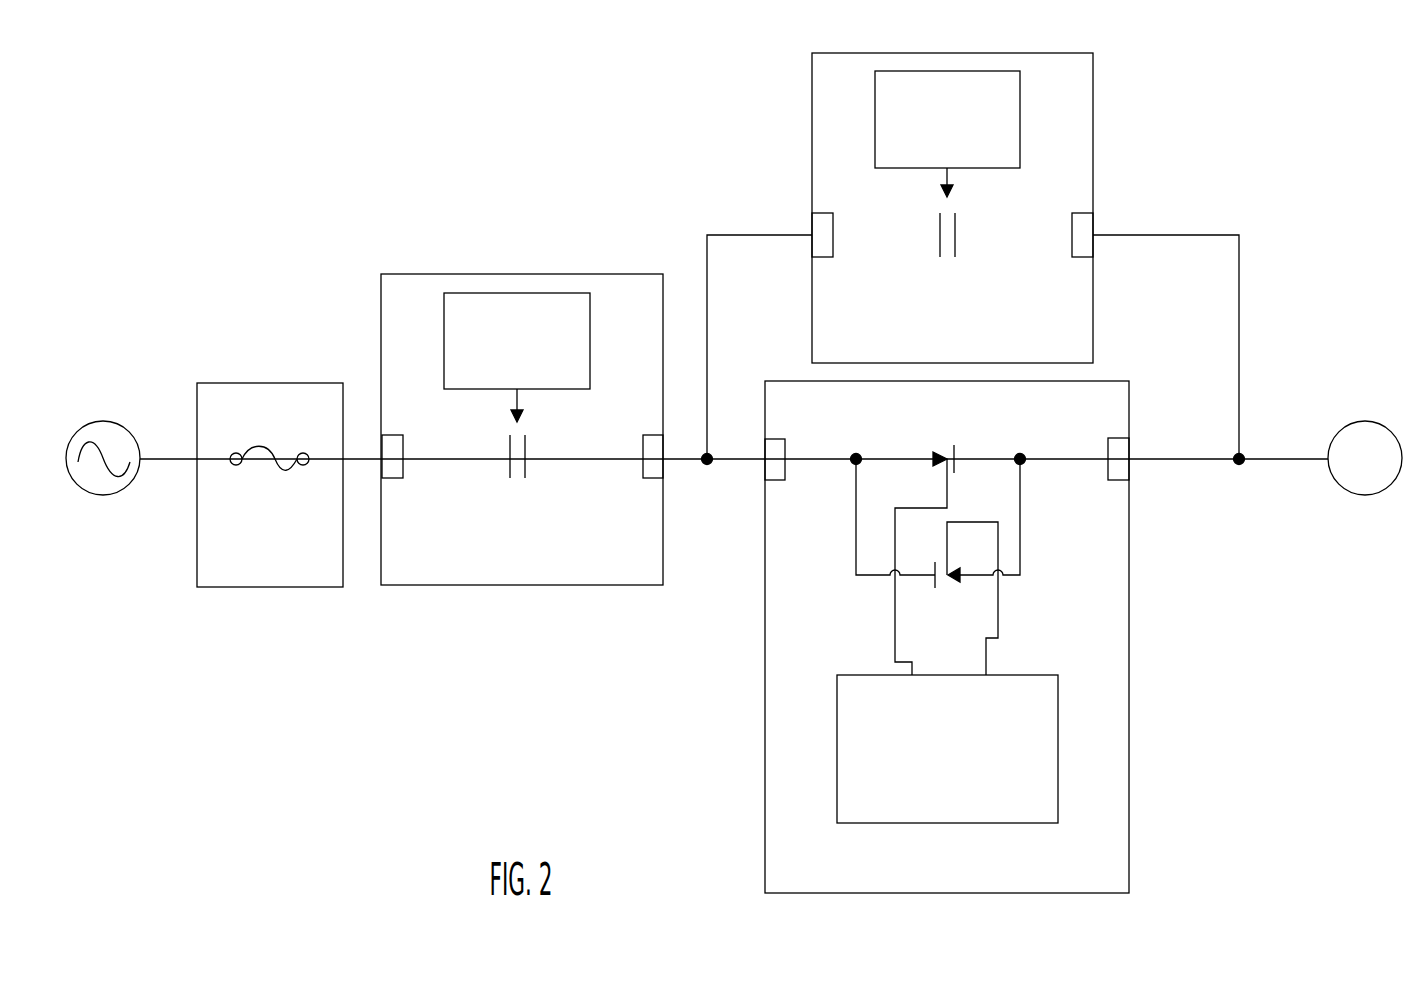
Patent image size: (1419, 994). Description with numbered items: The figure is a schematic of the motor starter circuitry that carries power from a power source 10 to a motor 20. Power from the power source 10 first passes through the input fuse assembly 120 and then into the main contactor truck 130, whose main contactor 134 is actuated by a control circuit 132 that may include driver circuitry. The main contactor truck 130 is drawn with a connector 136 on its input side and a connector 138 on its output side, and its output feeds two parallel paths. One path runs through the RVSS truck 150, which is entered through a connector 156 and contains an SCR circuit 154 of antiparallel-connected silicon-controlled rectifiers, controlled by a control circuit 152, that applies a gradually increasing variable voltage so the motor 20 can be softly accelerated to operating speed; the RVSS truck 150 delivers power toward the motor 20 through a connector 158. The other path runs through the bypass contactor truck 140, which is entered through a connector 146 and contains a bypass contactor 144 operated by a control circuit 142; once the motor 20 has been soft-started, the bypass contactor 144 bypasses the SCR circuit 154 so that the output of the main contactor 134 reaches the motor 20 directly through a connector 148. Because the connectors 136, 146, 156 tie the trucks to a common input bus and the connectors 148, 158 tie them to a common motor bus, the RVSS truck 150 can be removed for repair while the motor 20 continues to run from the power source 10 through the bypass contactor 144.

The power source 10 is at (115, 420).
The motor 20 is at (1343, 425).
The input fuse assembly 120 is at (254, 576).
The main contactor truck 130 is at (506, 577).
The control circuit 132 is at (533, 372).
The main contactor 134 is at (540, 473).
The connector 136 is at (392, 467).
The connector 138 is at (655, 447).
The bypass contactor truck 140 is at (936, 356).
The control circuit 142 is at (965, 151).
The bypass contactor 144 is at (973, 258).
The connector 146 is at (825, 222).
The connector 148 is at (1082, 226).
The RVSS truck 150 is at (932, 889).
The control circuit 152 is at (965, 779).
The SCR circuit 154 is at (1015, 595).
The connector 156 is at (777, 450).
The connector 158 is at (1117, 452).